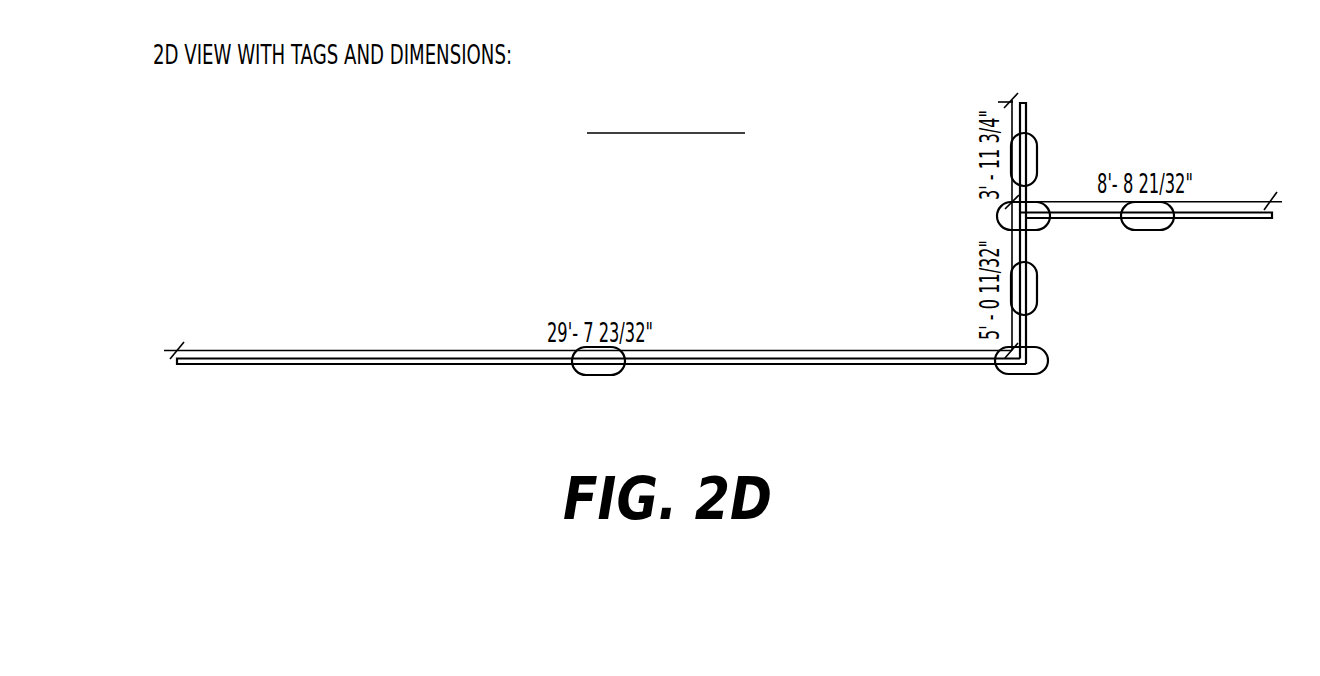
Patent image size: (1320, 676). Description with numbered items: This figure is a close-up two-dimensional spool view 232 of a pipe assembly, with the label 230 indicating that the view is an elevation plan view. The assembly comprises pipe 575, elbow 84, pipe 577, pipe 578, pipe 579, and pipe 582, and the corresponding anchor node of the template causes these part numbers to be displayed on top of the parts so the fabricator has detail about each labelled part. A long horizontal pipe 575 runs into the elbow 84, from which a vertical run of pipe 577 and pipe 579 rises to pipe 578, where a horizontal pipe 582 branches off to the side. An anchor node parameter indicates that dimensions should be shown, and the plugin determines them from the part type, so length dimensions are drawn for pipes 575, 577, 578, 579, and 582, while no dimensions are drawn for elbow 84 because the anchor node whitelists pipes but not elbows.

The label 230 is at (748, 118).
The view 232 is at (833, 365).
The pipe 575 is at (598, 361).
The pipe 577 is at (1024, 288).
The pipe 578 is at (1023, 216).
The pipe 579 is at (1024, 159).
The pipe 582 is at (1147, 216).
The elbow 84 is at (1021, 360).